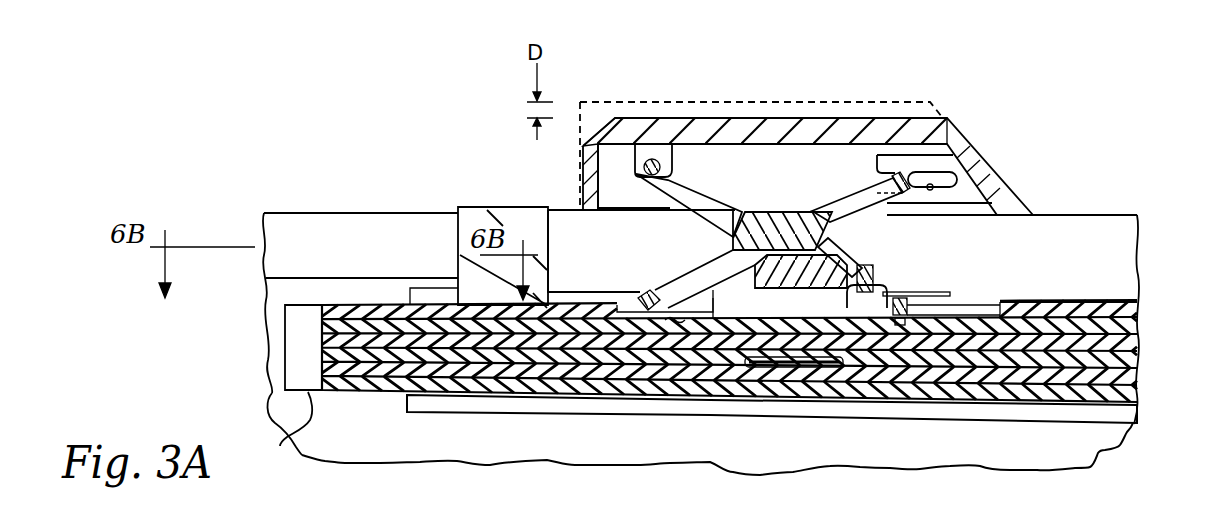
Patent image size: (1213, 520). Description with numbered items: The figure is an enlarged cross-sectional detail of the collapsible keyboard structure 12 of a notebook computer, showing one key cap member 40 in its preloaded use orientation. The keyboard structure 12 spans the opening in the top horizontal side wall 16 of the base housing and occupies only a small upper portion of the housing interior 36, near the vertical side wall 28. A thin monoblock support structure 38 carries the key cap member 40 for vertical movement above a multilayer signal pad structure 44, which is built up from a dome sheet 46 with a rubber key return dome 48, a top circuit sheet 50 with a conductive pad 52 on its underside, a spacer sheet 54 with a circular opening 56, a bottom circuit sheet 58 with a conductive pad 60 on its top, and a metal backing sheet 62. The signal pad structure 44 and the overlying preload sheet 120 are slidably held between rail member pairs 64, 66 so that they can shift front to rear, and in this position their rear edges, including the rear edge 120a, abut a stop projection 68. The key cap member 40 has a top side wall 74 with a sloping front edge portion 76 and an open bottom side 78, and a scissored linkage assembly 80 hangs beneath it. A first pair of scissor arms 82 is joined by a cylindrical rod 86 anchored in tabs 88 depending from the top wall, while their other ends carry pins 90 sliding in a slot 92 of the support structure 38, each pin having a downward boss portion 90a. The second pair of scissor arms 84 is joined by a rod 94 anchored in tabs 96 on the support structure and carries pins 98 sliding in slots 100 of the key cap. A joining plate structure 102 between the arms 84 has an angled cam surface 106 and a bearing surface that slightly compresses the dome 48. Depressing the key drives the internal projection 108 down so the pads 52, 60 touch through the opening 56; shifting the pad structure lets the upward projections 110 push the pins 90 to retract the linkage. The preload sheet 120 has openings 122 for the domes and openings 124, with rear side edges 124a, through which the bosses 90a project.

The collapsible keyboard structure 12 is at (432, 151).
The top horizontal side wall 16 is at (358, 212).
The vertical side wall 28 is at (757, 453).
The interior 36 is at (476, 445).
The monoblock support structure 38 is at (465, 207).
The key cap member 40 is at (906, 96).
The multilayer signal pad structure 44 is at (1147, 323).
The dome sheet 46 is at (320, 320).
The key return dome 48 is at (866, 268).
The top circuit sheet 50 is at (320, 340).
The electrically conductive pad 52 is at (773, 367).
The spacer sheet 54 is at (320, 362).
The circular opening 56 is at (848, 366).
The bottom circuit sheet 58 is at (320, 385).
The electrically conductive pad 60 is at (842, 417).
The metal backing sheet 62 is at (272, 418).
The rail member pair 64 is at (430, 290).
The rail member pair 66 is at (398, 402).
The stop projection 68 is at (288, 444).
The top side wall 74 is at (637, 98).
The front edge portion 76 is at (1025, 192).
The open bottom side 78 is at (633, 215).
The scissored linkage assembly 80 is at (757, 195).
The first pair of scissor arms 82 is at (713, 197).
The second pair of scissor arms 84 is at (697, 267).
The cylindrical rod 86 is at (637, 158).
The tab 88 is at (647, 183).
The cylindrical pin 90 is at (935, 290).
The transverse boss portion 90a is at (957, 403).
The slot 92 is at (988, 304).
The cylindrical rod 94 is at (652, 250).
The tab 96 is at (640, 302).
The cylindrical pin 98 is at (875, 162).
The slot 100 is at (930, 190).
The joining plate structure 102 is at (776, 206).
The cam surface 106 is at (834, 230).
The internal projection 108 is at (772, 289).
The upward projection 110 is at (845, 303).
The preload sheet 120 is at (342, 295).
The rear edge 120a is at (296, 300).
The opening 122 is at (673, 320).
The opening 124 is at (967, 302).
The rear side edge 124a is at (907, 327).